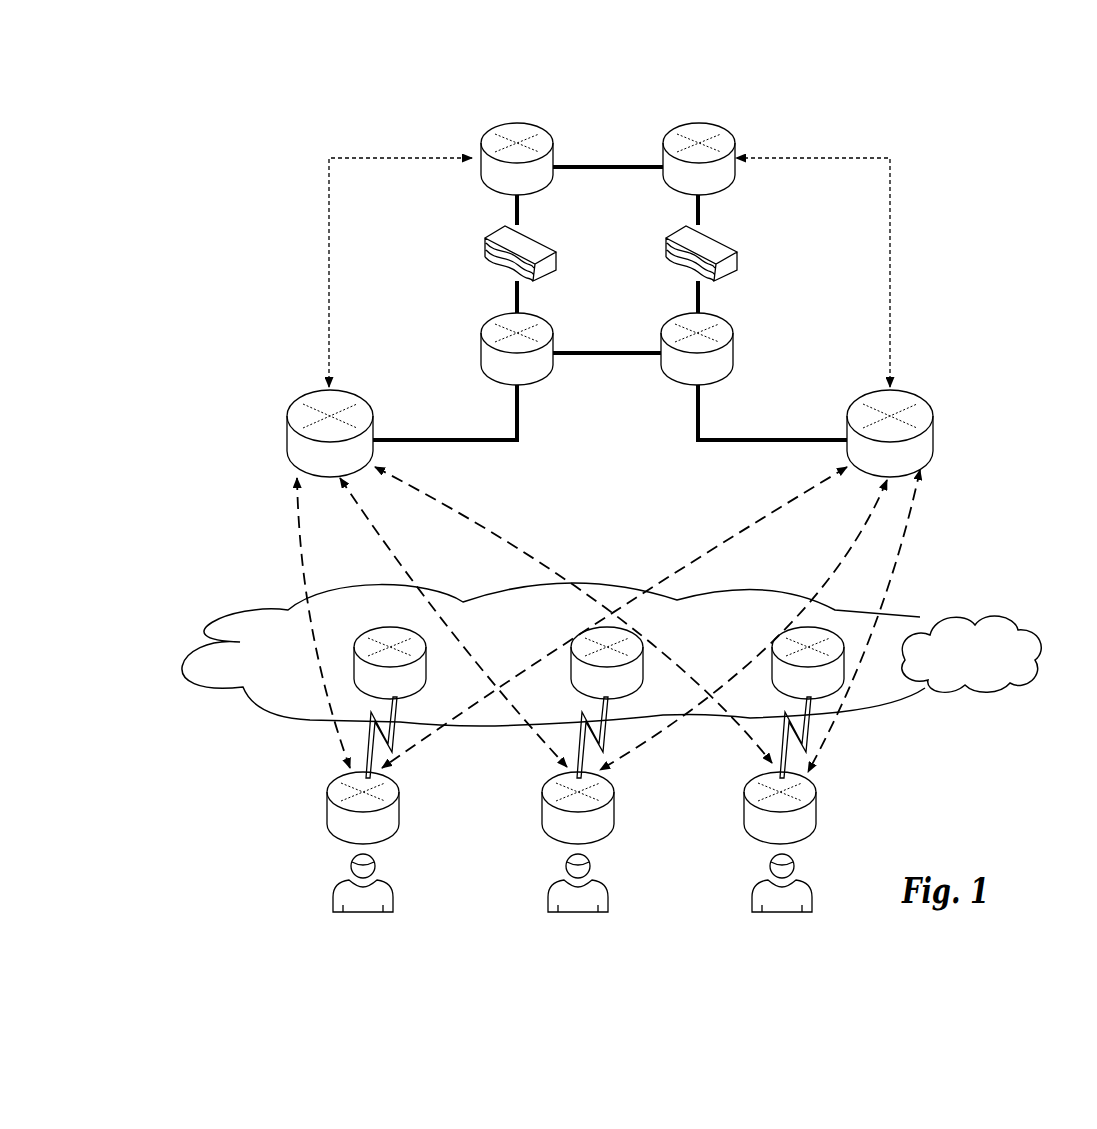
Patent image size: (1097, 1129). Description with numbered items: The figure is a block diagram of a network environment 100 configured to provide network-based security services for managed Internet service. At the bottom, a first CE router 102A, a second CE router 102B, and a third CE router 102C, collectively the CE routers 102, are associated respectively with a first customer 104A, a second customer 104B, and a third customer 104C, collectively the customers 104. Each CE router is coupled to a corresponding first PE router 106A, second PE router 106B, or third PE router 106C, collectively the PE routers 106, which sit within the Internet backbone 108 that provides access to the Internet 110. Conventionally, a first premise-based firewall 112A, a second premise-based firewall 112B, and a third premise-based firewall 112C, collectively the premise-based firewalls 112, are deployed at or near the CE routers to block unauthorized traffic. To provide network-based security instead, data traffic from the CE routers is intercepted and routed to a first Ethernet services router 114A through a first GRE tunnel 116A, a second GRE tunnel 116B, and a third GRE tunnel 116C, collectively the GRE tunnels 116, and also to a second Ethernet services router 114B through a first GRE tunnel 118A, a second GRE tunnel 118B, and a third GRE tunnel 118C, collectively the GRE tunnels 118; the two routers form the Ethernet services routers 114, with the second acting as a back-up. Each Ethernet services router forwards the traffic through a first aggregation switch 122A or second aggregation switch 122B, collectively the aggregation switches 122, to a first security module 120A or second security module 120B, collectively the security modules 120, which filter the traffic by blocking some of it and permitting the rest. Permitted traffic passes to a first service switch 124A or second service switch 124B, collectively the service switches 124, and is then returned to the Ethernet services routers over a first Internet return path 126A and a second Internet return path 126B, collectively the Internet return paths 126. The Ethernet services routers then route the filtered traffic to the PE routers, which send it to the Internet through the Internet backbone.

The network environment 100 is at (1027, 165).
The CE routers 102 is at (198, 797).
The first CE router 102A is at (315, 808).
The second CE router 102B is at (530, 808).
The third CE router 102C is at (731, 808).
The customers 104 is at (198, 885).
The first customer 104A is at (312, 885).
The second customer 104B is at (527, 885).
The third customer 104C is at (729, 885).
The PE routers 106 is at (155, 640).
The first PE router 106A is at (342, 663).
The second PE router 106B is at (559, 663).
The third PE router 106C is at (759, 663).
The Internet backbone 108 is at (255, 610).
The Internet 110 is at (971, 654).
The premise-based firewalls 112 is at (167, 712).
The first premise-based firewall 112A is at (347, 771).
The second premise-based firewall 112B is at (562, 771).
The third premise-based firewall 112C is at (764, 771).
The Ethernet services routers 114 is at (160, 388).
The first Ethernet services router 114A is at (244, 433).
The second Ethernet services router 114B is at (971, 433).
The GRE tunnels 116 is at (160, 532).
The first GRE tunnel 116A is at (302, 528).
The second GRE tunnel 116B is at (385, 523).
The third GRE tunnel 116C is at (422, 495).
The GRE tunnels 118 is at (160, 573).
The first GRE tunnel 118A is at (792, 495).
The second GRE tunnel 118B is at (855, 543).
The third GRE tunnel 118C is at (897, 553).
The security modules 120 is at (160, 259).
The first security module 120A is at (461, 254).
The second security module 120B is at (759, 254).
The aggregation switches 122 is at (160, 330).
The first aggregation switch 122A is at (457, 349).
The second aggregation switch 122B is at (757, 349).
The service switches 124 is at (176, 166).
The first service switch 124A is at (461, 151).
The second service switch 124B is at (761, 151).
The Internet return paths 126 is at (164, 210).
The first Internet return path 126A is at (327, 262).
The second Internet return path 126B is at (892, 262).